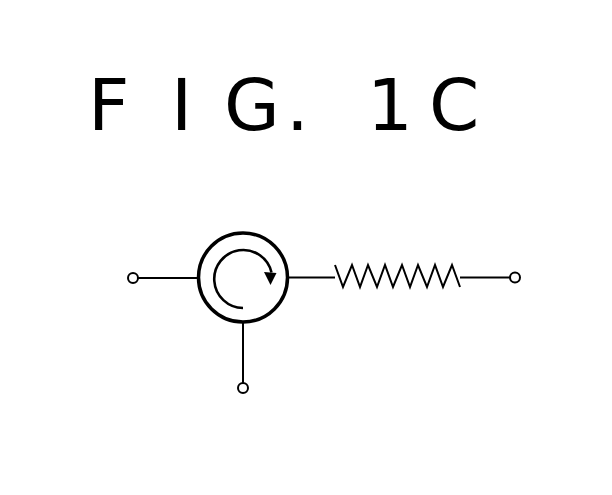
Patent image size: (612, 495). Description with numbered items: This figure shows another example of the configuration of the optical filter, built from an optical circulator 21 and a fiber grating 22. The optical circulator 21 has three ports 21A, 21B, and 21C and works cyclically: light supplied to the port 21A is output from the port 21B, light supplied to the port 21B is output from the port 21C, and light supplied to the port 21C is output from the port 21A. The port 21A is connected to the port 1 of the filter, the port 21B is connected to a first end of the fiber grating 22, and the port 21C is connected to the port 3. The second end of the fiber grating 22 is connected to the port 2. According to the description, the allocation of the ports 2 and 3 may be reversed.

The optical circulator 21 is at (243, 232).
The port 21A is at (197, 275).
The port 21B is at (289, 282).
The port 21C is at (242, 325).
The fiber grating 22 is at (400, 268).
The port 1 is at (133, 284).
The port 2 is at (515, 272).
The port 3 is at (249, 388).